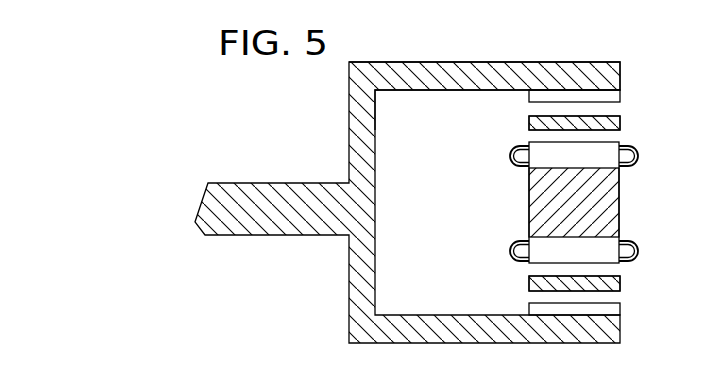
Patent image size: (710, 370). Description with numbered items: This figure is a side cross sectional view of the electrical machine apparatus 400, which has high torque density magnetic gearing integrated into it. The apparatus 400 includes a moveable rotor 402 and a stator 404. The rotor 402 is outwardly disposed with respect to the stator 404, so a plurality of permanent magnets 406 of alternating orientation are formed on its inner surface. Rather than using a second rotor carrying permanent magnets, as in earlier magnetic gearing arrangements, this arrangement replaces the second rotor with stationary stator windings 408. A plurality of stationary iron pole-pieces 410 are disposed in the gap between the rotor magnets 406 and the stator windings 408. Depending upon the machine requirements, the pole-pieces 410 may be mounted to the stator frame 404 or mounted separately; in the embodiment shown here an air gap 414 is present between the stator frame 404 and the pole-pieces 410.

The electrical machine apparatus 400 is at (314, 301).
The moveable rotor 402 is at (478, 63).
The stator 404 is at (529, 206).
The permanent magnets 406 is at (620, 96).
The stator windings 408 is at (642, 157).
The iron pole-pieces 410 is at (529, 128).
The air gap 414 is at (616, 138).